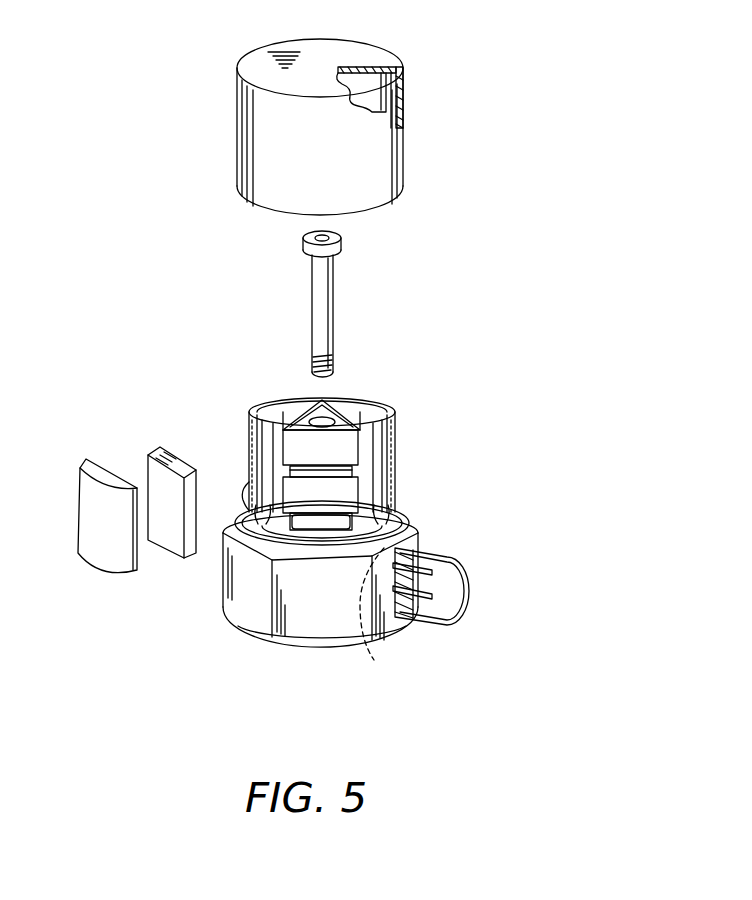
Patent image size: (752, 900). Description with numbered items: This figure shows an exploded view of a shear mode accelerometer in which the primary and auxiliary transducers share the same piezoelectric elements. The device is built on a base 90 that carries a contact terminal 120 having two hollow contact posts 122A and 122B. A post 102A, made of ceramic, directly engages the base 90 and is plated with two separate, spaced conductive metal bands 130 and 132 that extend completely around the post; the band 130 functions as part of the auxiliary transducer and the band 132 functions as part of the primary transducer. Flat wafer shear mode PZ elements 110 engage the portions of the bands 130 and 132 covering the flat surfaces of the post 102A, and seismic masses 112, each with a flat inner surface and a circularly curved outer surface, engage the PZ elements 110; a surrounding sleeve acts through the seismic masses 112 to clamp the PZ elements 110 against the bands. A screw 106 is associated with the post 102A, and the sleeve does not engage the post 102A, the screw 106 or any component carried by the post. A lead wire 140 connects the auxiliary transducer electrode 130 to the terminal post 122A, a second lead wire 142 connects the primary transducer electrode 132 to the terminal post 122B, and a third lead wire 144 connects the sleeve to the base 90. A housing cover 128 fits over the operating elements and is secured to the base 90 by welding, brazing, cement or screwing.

The housing cover 128 is at (256, 133).
The screw 106 is at (324, 288).
The post 102A is at (330, 418).
The metal band 130 is at (345, 447).
The metal band 132 is at (340, 492).
The third lead wire 144 is at (244, 495).
The lead wire 140 is at (400, 525).
The base 90 is at (243, 628).
The second lead wire 142 is at (374, 657).
The contact terminal 120 is at (436, 622).
The contact post 122A is at (432, 572).
The contact post 122B is at (432, 596).
The seismic mass 112 is at (82, 466).
The shear mode PZ element 110 is at (156, 470).